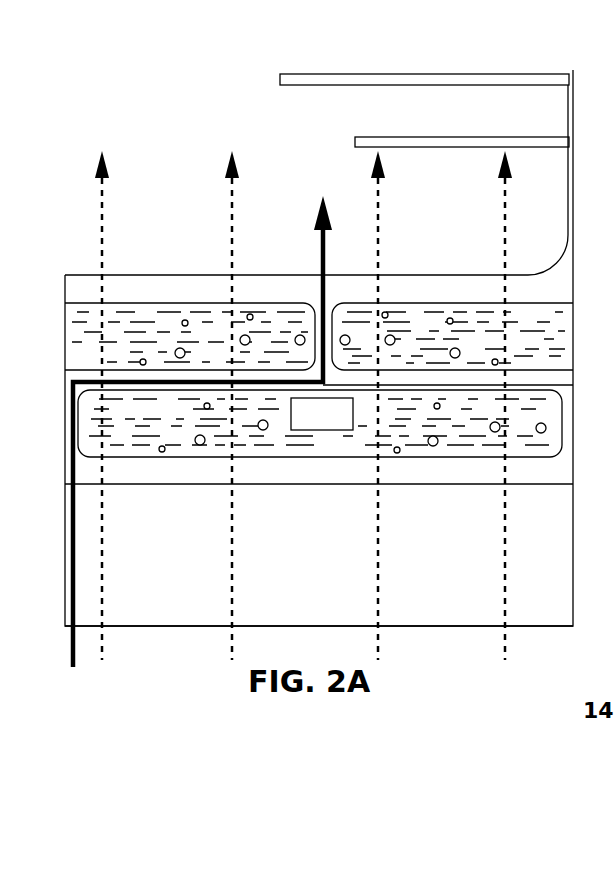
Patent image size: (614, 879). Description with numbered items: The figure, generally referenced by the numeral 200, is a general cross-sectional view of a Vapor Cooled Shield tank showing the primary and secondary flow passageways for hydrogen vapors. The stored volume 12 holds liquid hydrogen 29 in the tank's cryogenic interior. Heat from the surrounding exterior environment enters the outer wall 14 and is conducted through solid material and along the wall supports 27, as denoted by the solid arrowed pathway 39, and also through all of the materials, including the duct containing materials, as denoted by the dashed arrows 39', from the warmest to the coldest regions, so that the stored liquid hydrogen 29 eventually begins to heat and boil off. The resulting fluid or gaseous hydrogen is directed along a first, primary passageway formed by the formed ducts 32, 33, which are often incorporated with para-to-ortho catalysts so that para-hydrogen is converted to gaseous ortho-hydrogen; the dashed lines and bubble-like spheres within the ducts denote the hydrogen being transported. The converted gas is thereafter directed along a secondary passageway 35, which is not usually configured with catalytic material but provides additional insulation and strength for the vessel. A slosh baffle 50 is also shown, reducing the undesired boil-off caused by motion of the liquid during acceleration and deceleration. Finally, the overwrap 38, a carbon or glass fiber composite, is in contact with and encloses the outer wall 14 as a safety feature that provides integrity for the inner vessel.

The cross-sectional view of vapor cooled shield tank 200 is at (206, 96).
The stored volume 12 is at (318, 137).
The liquid hydrogen 29 is at (418, 122).
The slosh baffle 50 is at (490, 87).
The heat conduction pathway through all materials 39' is at (295, 388).
The heat conduction pathway along wall supports 39 is at (202, 427).
The wall support 27 is at (335, 294).
The formed duct 32 is at (205, 300).
The formed duct 33 is at (432, 303).
The secondary passageway 35 is at (333, 423).
The overwrap 38 is at (334, 561).
The outer wall 14 is at (242, 492).